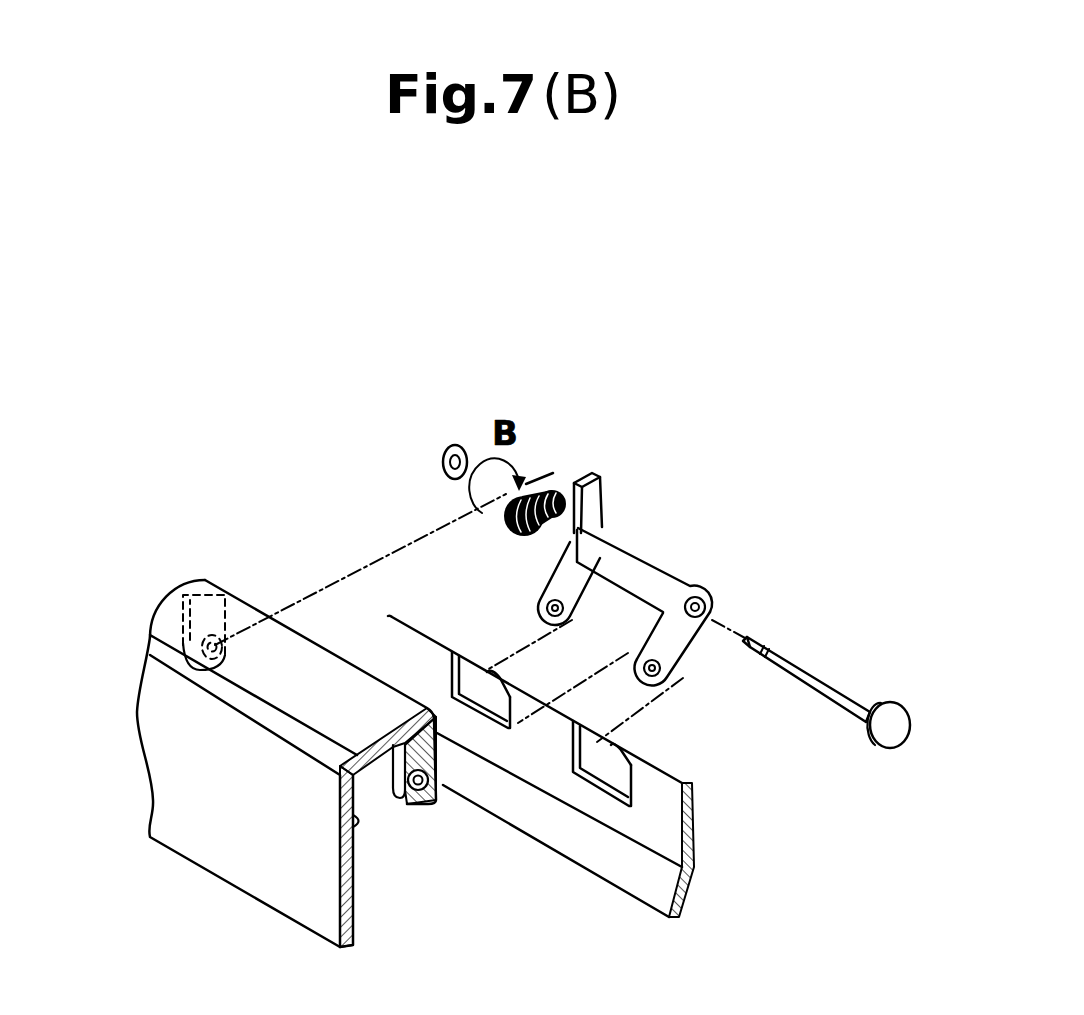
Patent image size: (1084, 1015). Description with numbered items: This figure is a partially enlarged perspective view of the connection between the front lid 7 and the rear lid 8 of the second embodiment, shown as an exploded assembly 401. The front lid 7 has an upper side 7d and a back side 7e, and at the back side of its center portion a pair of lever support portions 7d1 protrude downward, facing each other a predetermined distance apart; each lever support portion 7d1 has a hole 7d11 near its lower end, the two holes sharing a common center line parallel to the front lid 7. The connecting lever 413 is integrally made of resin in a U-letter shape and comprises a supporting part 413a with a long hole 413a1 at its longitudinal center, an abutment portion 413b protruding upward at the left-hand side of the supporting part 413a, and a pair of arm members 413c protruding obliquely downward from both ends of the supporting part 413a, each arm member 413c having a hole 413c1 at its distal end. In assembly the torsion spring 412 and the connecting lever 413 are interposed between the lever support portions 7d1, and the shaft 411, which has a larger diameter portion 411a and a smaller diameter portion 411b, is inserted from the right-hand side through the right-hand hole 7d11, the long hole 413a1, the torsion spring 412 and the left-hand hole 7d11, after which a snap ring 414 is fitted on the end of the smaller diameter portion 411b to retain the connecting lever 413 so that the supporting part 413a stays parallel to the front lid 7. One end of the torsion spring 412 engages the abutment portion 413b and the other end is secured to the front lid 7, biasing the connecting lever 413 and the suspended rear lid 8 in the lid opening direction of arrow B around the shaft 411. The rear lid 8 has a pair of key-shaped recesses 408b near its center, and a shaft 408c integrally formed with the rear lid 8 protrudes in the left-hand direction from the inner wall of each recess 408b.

The front lid 7 is at (209, 873).
The upper side 7d is at (182, 581).
The lever support portion 7d1 is at (395, 921).
The hole 7d11 is at (428, 873).
The back side 7e is at (335, 830).
The rear lid 8 is at (645, 922).
The recess 408b is at (478, 735).
The shaft 408c is at (449, 650).
The lever unit 401 is at (256, 351).
The shaft 411 is at (943, 642).
The larger diameter portion 411a is at (907, 717).
The smaller diameter portion 411b is at (826, 686).
The torsion spring 412 is at (548, 490).
The connecting lever 413 is at (652, 532).
The supporting part 413a is at (672, 576).
The long hole 413a1 is at (713, 603).
The abutment portion 413b is at (598, 472).
The arm member 413c is at (548, 570).
The hole 413c1 is at (722, 742).
The snap ring 414 is at (456, 444).